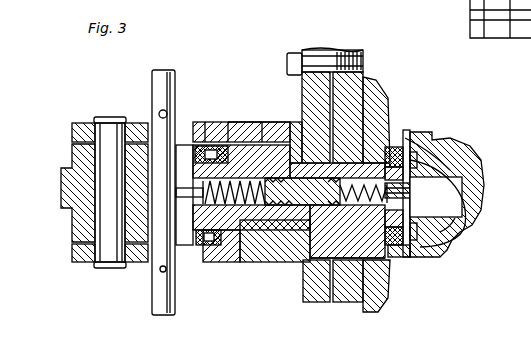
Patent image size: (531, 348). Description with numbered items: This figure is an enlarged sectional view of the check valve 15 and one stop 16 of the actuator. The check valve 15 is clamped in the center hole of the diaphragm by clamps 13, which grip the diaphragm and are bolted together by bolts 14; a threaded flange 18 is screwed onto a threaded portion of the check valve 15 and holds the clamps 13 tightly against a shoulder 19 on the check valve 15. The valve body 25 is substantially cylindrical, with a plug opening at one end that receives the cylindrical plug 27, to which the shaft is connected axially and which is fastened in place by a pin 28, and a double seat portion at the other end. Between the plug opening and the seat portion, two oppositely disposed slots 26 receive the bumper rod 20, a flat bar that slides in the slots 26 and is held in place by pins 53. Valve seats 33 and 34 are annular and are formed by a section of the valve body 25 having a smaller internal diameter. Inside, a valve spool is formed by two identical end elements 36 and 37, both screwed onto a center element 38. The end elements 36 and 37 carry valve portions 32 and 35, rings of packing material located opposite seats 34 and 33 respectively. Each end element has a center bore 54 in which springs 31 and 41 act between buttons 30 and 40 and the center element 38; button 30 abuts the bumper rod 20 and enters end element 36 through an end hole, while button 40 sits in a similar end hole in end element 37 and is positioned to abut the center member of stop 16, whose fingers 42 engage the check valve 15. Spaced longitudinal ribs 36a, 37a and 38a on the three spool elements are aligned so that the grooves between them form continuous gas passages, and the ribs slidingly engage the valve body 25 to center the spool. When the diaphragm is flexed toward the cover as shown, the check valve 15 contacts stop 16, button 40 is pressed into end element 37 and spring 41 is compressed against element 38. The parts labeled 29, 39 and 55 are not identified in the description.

The clamps 13 is at (312, 50).
The bolts 14 is at (292, 53).
The check valve 15 is at (85, 122).
The stop 16 is at (476, 195).
The threaded flange 18 is at (376, 85).
The shoulder 19 is at (304, 150).
The bumper rod 20 is at (176, 77).
The valve body 25 is at (224, 262).
The slots 26 is at (203, 262).
The cylindrical plug 27 is at (70, 228).
The pin 28 is at (105, 270).
The lower plate 29 is at (133, 265).
The button 30 is at (188, 186).
The spring 31 is at (257, 172).
The valve portion 32 is at (213, 150).
The valve seat 33 is at (400, 129).
The valve seat 34 is at (236, 121).
The valve portion 35 is at (407, 263).
The end element 36 is at (250, 226).
The longitudinal ribs 36a is at (293, 160).
The end element 37 is at (310, 272).
The longitudinal ribs 37a is at (405, 150).
The center element 38 is at (310, 195).
The longitudinal ribs 38a is at (305, 145).
The knob recess 39 is at (444, 235).
The button 40 is at (445, 170).
The spring 41 is at (382, 275).
The fingers 42 is at (437, 143).
The pins 53 is at (159, 113).
The center bore 54 is at (263, 145).
The spacer 55 is at (190, 200).